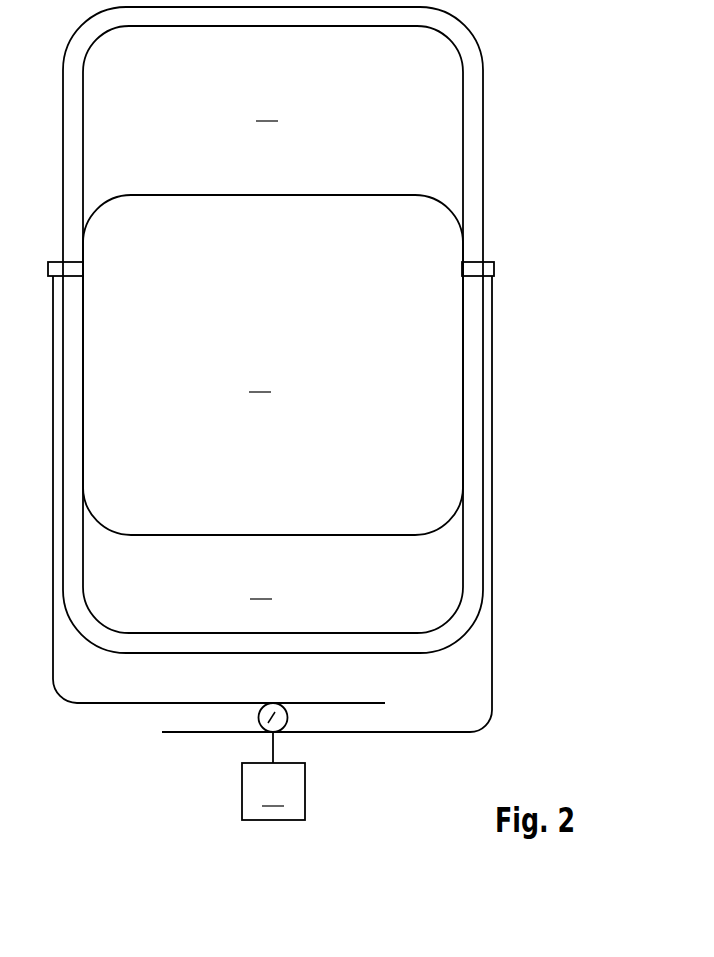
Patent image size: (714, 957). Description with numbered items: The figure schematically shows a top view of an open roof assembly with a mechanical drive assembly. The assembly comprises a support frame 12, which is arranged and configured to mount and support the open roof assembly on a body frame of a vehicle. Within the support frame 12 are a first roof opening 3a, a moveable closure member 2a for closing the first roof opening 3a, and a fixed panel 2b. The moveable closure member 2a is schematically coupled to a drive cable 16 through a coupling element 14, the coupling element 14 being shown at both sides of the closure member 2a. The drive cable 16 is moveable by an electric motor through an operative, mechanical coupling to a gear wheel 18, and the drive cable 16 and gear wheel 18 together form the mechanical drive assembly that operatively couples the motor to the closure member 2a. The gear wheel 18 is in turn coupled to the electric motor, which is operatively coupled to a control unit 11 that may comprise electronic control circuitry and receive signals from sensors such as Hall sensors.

The moveable closure member 2a is at (273, 365).
The fixed panel 2b is at (261, 588).
The first roof opening 3a is at (267, 110).
The control unit 11 is at (273, 776).
The support frame 12 is at (474, 153).
The coupling element 14 is at (472, 272).
The drive cable 16 is at (492, 372).
The gear wheel 18 is at (265, 733).